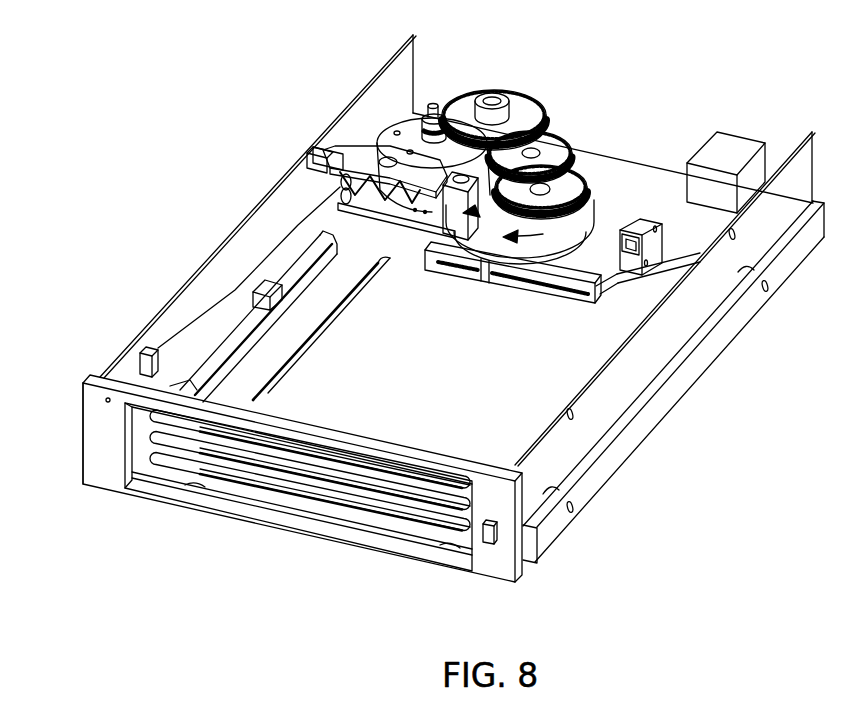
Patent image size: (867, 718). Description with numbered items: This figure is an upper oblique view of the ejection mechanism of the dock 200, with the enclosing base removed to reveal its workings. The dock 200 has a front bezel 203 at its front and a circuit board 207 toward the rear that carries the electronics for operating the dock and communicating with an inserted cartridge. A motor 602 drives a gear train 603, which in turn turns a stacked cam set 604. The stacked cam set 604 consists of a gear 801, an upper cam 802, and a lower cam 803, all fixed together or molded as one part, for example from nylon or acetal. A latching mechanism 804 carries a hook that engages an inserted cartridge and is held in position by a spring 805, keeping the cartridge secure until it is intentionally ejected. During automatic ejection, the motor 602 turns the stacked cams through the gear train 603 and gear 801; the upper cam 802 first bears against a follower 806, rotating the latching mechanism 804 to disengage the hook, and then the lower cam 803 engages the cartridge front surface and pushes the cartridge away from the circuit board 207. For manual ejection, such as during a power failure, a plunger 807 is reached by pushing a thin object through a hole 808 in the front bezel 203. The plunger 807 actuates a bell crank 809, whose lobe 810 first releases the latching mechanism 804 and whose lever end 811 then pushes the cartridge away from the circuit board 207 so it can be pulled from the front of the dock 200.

The dock 200 is at (258, 92).
The front bezel 203 is at (487, 568).
The circuit board 207 is at (612, 160).
The motor 602 is at (420, 105).
The gear train 603 is at (520, 117).
The stacked cam set 604 is at (565, 183).
The gear 801 is at (568, 184).
The upper cam 802 is at (587, 206).
The lower cam 803 is at (541, 243).
The latching mechanism 804 is at (452, 215).
The spring 805 is at (418, 203).
The follower 806 is at (482, 155).
The plunger 807 is at (137, 362).
The hole 808 is at (100, 402).
The bell crank 809 is at (355, 157).
The lobe 810 is at (423, 157).
The lever end 811 is at (433, 148).